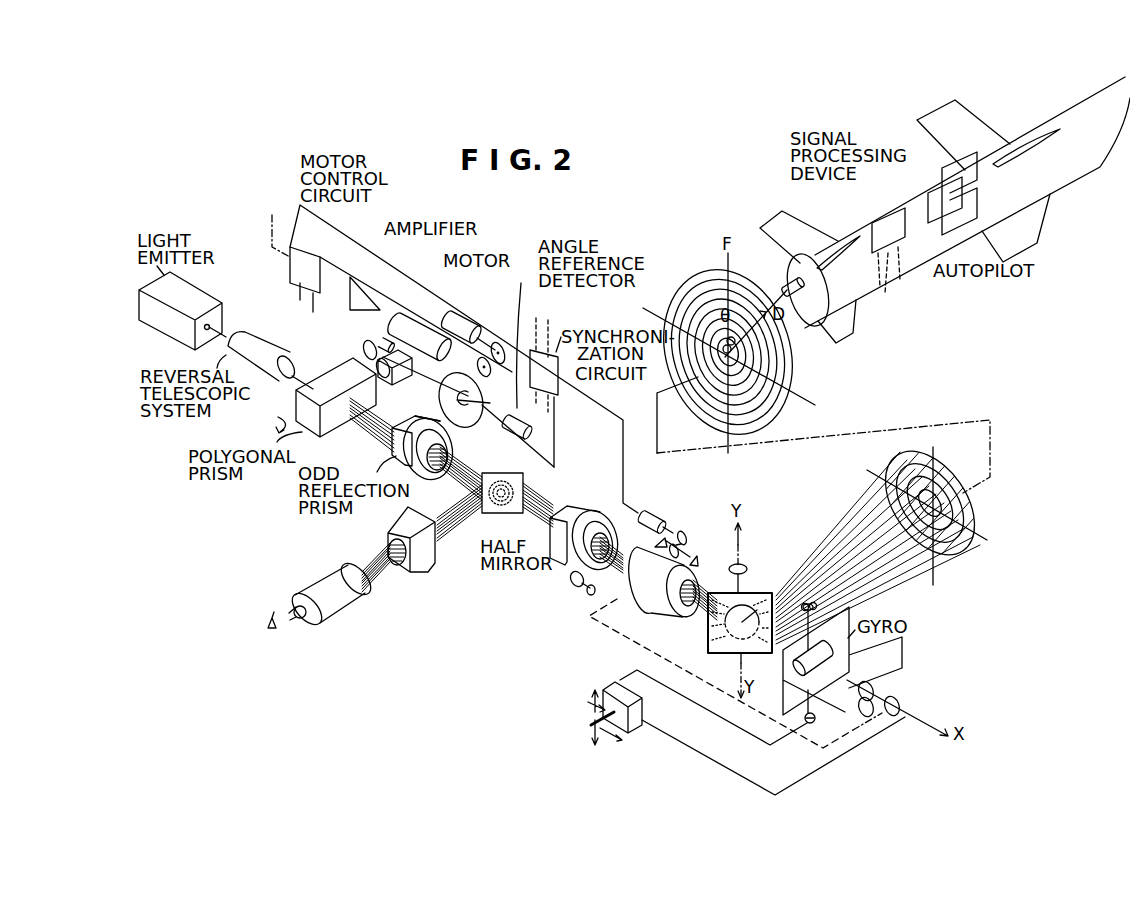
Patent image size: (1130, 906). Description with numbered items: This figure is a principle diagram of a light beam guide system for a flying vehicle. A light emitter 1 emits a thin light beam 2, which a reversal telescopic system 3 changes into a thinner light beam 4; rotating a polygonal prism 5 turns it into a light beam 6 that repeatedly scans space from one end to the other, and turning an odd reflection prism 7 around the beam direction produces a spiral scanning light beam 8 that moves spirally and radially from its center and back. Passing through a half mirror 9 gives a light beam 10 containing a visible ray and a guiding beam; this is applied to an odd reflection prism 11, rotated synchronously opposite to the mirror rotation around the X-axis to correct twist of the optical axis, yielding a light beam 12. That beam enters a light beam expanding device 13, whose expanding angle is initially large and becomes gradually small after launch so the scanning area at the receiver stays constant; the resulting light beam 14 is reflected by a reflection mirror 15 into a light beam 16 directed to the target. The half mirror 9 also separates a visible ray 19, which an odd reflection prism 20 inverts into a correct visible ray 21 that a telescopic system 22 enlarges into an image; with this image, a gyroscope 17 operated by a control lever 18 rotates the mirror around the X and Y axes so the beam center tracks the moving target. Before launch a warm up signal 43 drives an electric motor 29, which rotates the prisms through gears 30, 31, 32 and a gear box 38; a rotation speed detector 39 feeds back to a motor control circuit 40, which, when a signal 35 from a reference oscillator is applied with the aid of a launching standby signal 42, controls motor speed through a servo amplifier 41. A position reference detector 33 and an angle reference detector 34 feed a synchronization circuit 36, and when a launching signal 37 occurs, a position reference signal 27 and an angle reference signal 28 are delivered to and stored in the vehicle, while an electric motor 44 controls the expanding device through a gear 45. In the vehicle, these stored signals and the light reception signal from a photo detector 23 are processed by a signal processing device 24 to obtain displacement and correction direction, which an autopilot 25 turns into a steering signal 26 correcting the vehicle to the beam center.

The light emitter 1 is at (180, 311).
The thin light beam 2 is at (226, 337).
The reversal telescopic system 3 is at (263, 356).
The thinner light beam 4 is at (302, 373).
The polygonal prism 5 is at (336, 397).
The light beam 6 is at (372, 426).
The odd reflection prism 7 is at (425, 449).
The spiral scanning light beam 8 is at (461, 474).
The half mirror 9 is at (497, 514).
The light beam 10 is at (538, 513).
The odd reflection prism 11 is at (587, 539).
The light beam 12 is at (596, 568).
The light beam expanding device 13 is at (666, 578).
The light beam 14 is at (699, 608).
The reflection mirror 15 is at (740, 623).
The light beam 16 is at (822, 535).
The gyroscope 17 is at (842, 663).
The control lever 18 is at (621, 719).
The visible ray 19 is at (459, 522).
The odd reflection prism 20 is at (412, 539).
The correct visible ray 21 is at (382, 573).
The telescopic system 22 is at (331, 594).
The photo detector 23 is at (788, 288).
The signal processing device 24 is at (871, 226).
The autopilot 25 is at (940, 228).
The steering signal 26 is at (940, 196).
The position reference signal 27 is at (731, 350).
The angle reference signal 28 is at (706, 349).
The electric motor 29 is at (412, 312).
The gear 30 is at (493, 369).
The gear 31 is at (493, 417).
The gear 32 is at (446, 437).
The position reference detector 33 is at (378, 349).
The angle reference detector 34 is at (517, 351).
The signal 35 is at (906, 285).
The synchronization circuit 36 is at (544, 372).
The launching signal 37 is at (569, 432).
The gear box 38 is at (399, 379).
The rotation speed detector 39 is at (459, 321).
The motor control circuit 40 is at (303, 241).
The servo amplifier 41 is at (351, 276).
The launching standby signal 42 is at (319, 312).
The warm up signal 43 is at (296, 302).
The electric motor 44 is at (657, 515).
The gear 45 is at (690, 544).